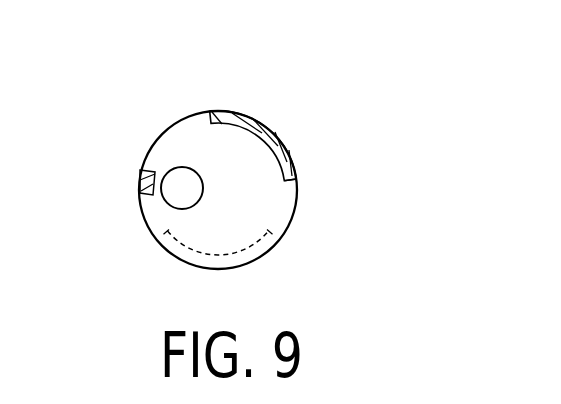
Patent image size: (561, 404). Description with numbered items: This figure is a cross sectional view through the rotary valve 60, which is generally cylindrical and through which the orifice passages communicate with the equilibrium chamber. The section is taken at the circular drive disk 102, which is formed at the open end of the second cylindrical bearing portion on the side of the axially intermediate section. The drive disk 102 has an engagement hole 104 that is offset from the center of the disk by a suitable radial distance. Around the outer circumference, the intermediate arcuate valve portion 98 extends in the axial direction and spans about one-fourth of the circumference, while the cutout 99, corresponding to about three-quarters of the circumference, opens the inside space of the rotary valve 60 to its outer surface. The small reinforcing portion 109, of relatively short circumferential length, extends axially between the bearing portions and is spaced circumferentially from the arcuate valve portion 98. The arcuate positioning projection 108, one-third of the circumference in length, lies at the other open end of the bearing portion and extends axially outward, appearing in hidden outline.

The rotary valve 60 is at (240, 62).
The arcuate valve portion 98 is at (268, 133).
The cutout 99 is at (294, 200).
The drive disk 102 is at (190, 135).
The engagement hole 104 is at (176, 203).
The positioning projection 108 is at (218, 258).
The reinforcing portion 109 is at (140, 186).